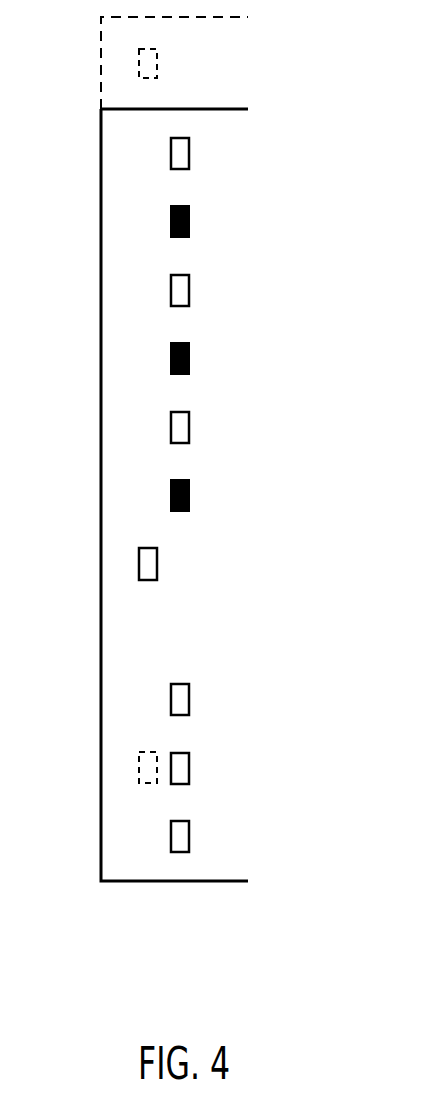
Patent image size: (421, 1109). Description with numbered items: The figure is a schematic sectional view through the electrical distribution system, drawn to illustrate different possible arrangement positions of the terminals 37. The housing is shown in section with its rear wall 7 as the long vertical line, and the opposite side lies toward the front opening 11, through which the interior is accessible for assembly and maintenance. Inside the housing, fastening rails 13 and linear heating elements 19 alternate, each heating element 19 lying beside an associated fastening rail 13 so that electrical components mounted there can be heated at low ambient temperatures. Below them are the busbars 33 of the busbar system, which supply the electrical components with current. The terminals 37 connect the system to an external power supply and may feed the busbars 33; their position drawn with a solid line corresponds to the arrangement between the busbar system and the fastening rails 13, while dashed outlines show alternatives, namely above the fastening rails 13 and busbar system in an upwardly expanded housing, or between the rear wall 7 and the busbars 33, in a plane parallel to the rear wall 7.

The rear wall 7 is at (101, 357).
The front opening 11 is at (217, 636).
The fastening rails 13 is at (181, 153).
The heating elements 19 is at (189, 221).
The busbars 33 is at (181, 700).
The terminals 37 is at (148, 63).